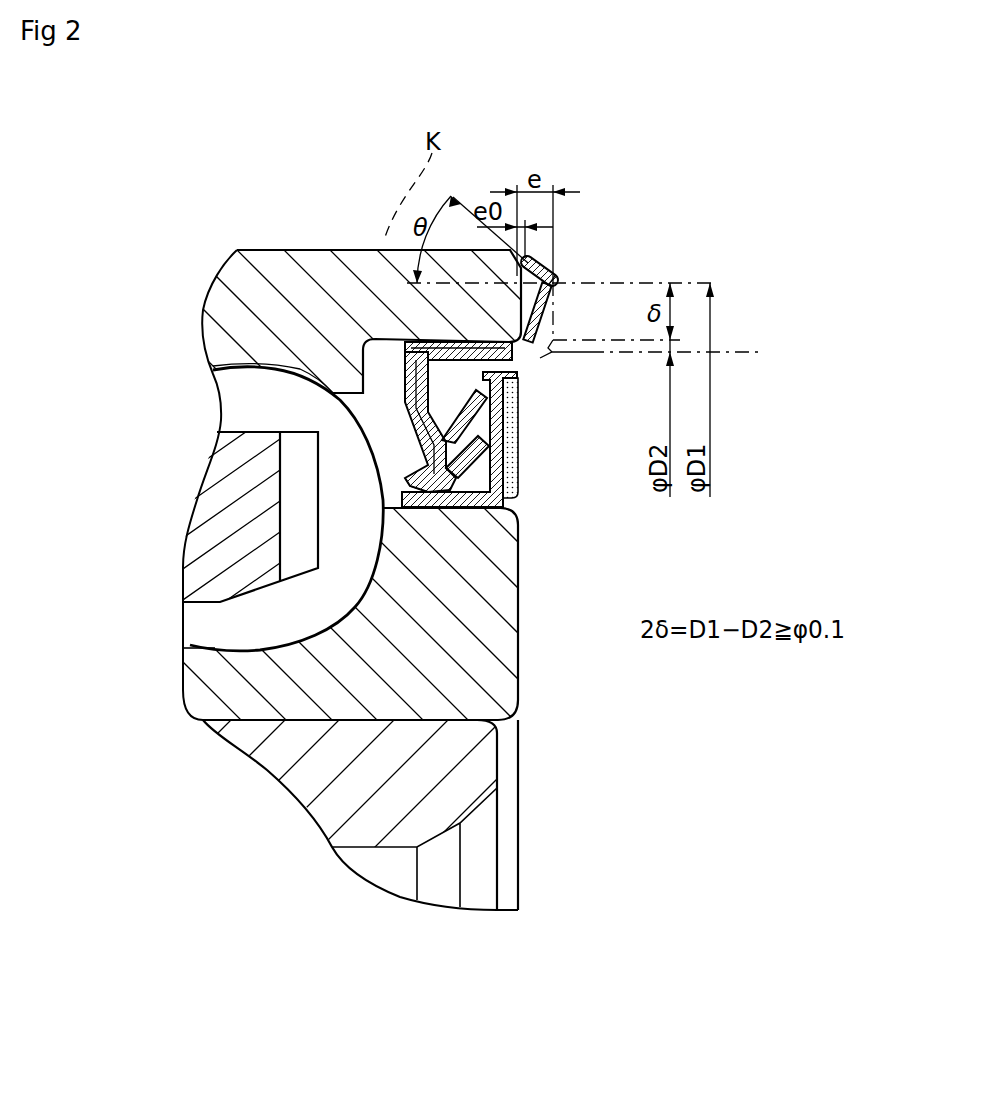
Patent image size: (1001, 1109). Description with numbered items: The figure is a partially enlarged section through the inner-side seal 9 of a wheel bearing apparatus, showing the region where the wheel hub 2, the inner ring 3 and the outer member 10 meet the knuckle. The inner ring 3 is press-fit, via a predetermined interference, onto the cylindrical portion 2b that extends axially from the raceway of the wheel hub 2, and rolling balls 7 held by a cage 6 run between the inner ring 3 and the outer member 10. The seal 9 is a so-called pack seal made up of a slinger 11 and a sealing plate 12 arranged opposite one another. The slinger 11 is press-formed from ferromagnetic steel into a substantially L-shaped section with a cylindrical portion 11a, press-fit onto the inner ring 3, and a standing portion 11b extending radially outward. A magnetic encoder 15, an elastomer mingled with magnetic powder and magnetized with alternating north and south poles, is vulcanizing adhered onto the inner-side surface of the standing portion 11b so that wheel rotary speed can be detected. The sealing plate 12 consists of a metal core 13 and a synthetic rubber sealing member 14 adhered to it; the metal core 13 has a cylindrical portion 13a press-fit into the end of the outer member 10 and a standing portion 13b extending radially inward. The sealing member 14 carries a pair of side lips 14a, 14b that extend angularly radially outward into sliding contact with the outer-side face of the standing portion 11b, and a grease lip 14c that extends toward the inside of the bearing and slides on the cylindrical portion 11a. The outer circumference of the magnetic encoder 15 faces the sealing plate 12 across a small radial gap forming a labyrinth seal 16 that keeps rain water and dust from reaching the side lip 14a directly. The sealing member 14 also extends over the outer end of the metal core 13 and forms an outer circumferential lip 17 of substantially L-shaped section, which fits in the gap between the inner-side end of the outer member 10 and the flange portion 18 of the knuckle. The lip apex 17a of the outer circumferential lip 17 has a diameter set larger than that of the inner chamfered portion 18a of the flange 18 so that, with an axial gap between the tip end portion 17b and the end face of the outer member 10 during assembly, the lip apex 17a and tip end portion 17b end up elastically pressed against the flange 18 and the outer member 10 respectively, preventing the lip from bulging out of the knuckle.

The wheel hub 2 is at (252, 752).
The cylindrical portion 2b is at (380, 673).
The inner ring 3 is at (437, 670).
The cage 6 is at (220, 577).
The ball 7 is at (240, 636).
The inner-side seal 9 is at (506, 439).
The outer member 10 is at (248, 303).
The slinger 11 is at (568, 531).
The cylindrical portion 11a is at (453, 520).
The standing portion 11b is at (492, 467).
The sealing plate 12 is at (256, 441).
The metal core 13 is at (278, 407).
The cylindrical portion 13a is at (410, 340).
The standing portion 13b is at (413, 406).
The sealing member 14 is at (267, 475).
The side lip 14a is at (480, 395).
The side lip 14b is at (458, 442).
The grease lip 14c is at (410, 483).
The magnetic encoder 15 is at (515, 428).
The labyrinth seal 16 is at (519, 372).
The outer circumferential lip 17 is at (581, 278).
The lip apex 17a is at (557, 282).
The tip end portion 17b is at (536, 259).
The flange portion 18 is at (683, 340).
The inner chamfered portion 18a is at (548, 360).